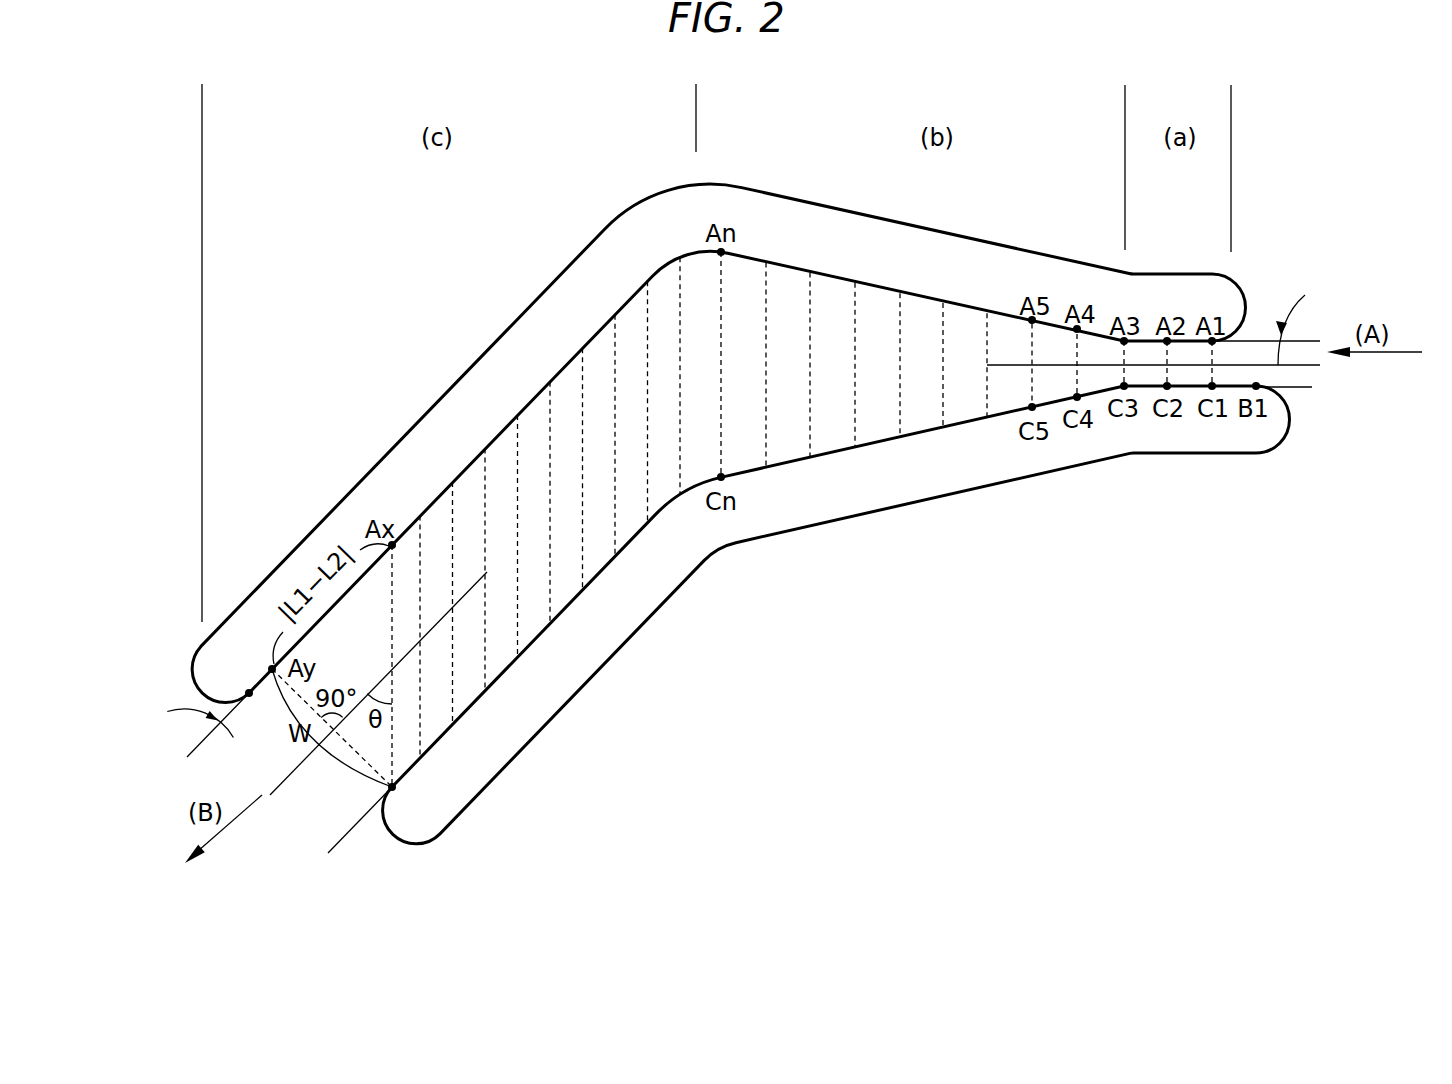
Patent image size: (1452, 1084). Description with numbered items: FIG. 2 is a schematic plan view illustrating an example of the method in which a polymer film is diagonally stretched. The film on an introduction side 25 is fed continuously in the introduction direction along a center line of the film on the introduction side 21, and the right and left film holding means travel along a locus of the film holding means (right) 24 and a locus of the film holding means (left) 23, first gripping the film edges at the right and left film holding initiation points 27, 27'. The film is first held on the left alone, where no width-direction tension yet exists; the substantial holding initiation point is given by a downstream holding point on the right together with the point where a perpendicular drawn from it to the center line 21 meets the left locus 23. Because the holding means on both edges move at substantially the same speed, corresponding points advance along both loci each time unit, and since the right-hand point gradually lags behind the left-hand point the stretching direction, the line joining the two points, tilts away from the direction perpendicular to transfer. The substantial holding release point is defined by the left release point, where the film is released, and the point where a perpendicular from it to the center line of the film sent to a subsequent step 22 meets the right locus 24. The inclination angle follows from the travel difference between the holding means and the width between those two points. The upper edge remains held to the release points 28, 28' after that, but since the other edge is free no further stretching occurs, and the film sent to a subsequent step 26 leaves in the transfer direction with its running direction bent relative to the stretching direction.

The center line of a film on an introduction side 21 is at (1168, 367).
The center line of a film sent to a subsequent step 22 is at (378, 695).
The locus of a film holding means (left) 23 is at (893, 440).
The locus of a film holding means (right) 24 is at (435, 499).
The film on an introduction side 25 is at (1303, 330).
The film sent to a subsequent step 26 is at (199, 727).
The right film holding initiation point 27 is at (1211, 313).
The left film holding initiation point 27' is at (1254, 414).
The release point from right film holding means 28 is at (240, 680).
The release point from left film holding means 28' is at (419, 806).